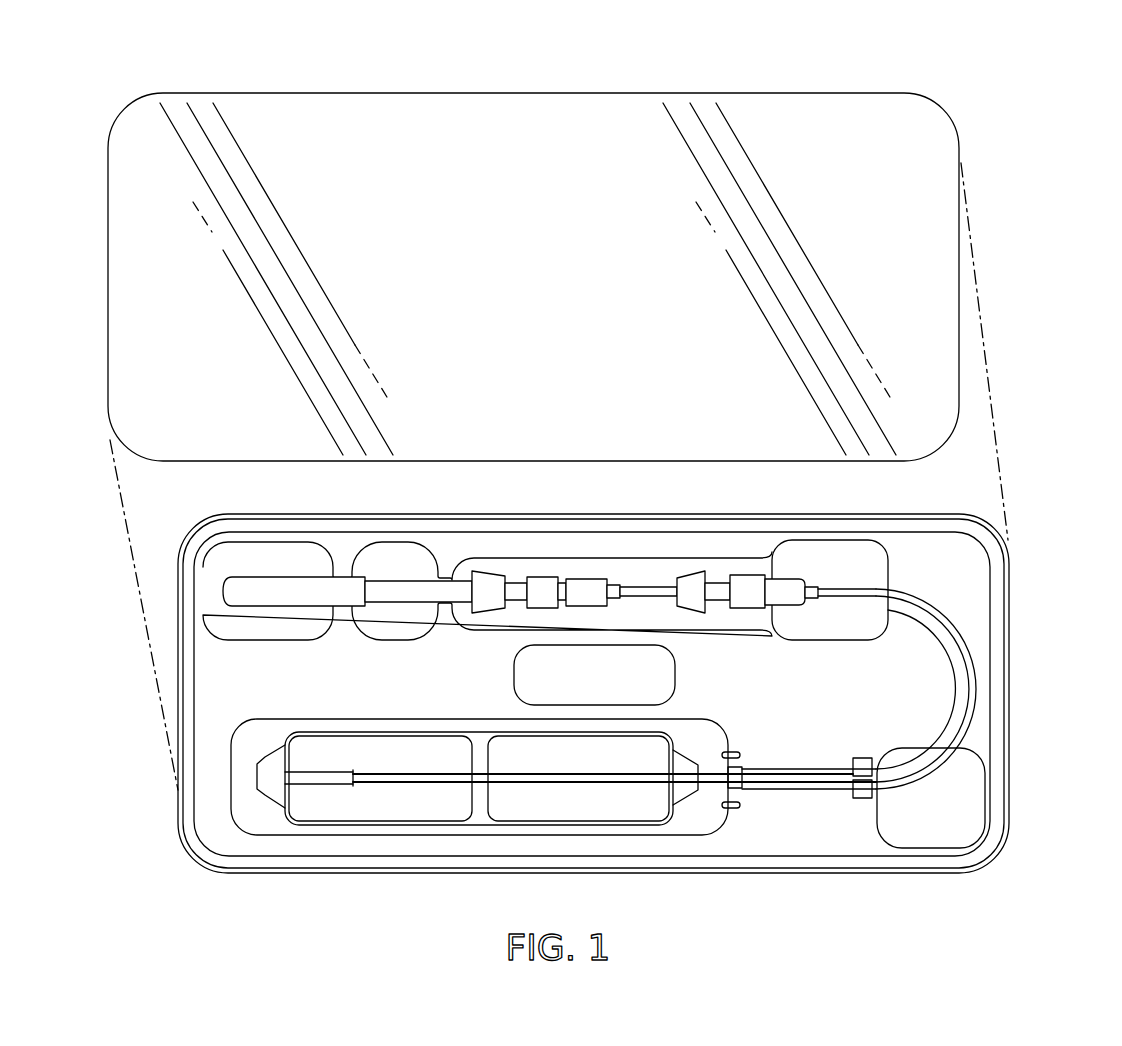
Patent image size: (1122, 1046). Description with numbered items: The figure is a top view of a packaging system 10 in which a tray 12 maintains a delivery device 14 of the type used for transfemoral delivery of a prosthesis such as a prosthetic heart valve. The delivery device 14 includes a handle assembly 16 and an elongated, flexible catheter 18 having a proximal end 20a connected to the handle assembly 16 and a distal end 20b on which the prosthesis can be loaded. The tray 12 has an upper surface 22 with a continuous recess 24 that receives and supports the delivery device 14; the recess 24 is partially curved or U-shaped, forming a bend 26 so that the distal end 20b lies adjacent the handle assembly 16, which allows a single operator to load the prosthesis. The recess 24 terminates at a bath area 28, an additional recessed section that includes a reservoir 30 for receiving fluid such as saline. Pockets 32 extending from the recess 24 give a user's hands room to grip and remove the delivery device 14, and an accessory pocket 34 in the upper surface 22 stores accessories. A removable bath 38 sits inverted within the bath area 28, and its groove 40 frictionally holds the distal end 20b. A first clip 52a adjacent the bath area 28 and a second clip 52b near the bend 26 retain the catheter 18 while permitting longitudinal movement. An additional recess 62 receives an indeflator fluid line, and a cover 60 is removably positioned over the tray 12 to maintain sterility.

The packaging system 10 is at (195, 74).
The tray 12 is at (960, 505).
The delivery device 14 is at (610, 568).
The handle assembly 16 is at (343, 558).
The catheter 18 is at (967, 654).
The proximal end 20a is at (826, 602).
The distal end 20b is at (360, 790).
The upper surface 22 is at (205, 684).
The recess 24 is at (952, 615).
The bend 26 is at (978, 693).
The bath area 28 is at (697, 735).
The reservoir 30 is at (705, 828).
The pockets 32 is at (268, 560).
The accessory pockets 34 is at (665, 670).
The removable bath 38 is at (311, 805).
The groove 40 is at (327, 767).
The first clip 52a is at (742, 768).
The second clip 52b is at (862, 755).
The cover 60 is at (583, 108).
The additional recess 62 is at (735, 752).